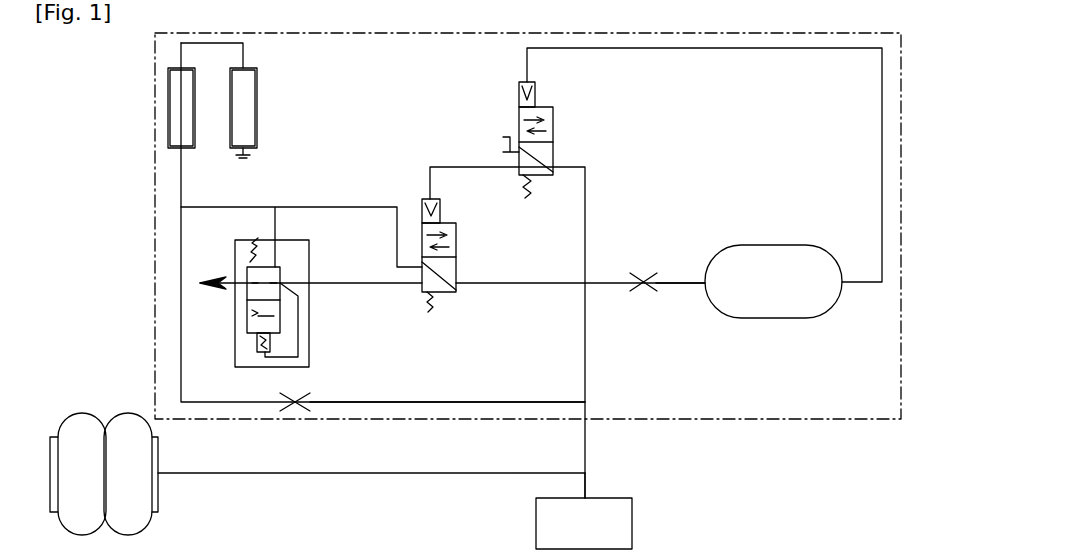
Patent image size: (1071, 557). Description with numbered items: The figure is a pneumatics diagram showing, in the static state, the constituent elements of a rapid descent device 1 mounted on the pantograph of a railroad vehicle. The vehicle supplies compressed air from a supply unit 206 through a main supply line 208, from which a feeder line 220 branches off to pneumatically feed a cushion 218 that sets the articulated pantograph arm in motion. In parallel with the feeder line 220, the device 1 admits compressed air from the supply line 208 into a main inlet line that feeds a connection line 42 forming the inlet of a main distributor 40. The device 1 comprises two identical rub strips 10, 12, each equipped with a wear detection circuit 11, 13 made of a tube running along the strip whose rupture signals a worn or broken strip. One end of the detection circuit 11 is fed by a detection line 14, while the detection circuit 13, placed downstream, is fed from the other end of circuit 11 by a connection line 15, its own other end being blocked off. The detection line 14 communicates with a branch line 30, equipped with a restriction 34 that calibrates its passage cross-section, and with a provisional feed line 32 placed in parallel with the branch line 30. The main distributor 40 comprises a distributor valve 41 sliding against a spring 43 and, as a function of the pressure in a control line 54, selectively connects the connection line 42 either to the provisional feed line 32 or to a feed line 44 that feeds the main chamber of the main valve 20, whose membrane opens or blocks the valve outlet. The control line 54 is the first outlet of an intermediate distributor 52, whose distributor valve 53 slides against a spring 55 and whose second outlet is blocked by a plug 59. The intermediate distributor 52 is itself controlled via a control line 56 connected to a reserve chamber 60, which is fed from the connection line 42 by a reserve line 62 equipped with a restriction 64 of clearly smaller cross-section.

The rapid descent device 1 is at (148, 45).
The rub strip 10 is at (167, 118).
The wear detection circuit 11 is at (181, 135).
The rub strip 12 is at (257, 85).
The wear detection circuit 13 is at (250, 125).
The detection line 14 is at (174, 167).
The connection line 15 is at (208, 58).
The main valve 20 is at (322, 338).
The branch line 30 is at (395, 403).
The provisional feed line 32 is at (343, 205).
The restriction 34 is at (290, 410).
The main distributor 40 is at (489, 272).
The distributor valve 41 is at (456, 235).
The connection line 42 is at (518, 284).
The spring 43 is at (427, 312).
The feed line 44 is at (345, 285).
The intermediate distributor 52 is at (539, 124).
The distributor valve 53 is at (553, 115).
The control line 54 is at (445, 165).
The spring 55 is at (540, 205).
The control line 56 is at (680, 50).
The plug 59 is at (506, 122).
The reserve chamber 60 is at (773, 281).
The reserve line 62 is at (680, 285).
The restriction 64 is at (640, 270).
The supply unit 206 is at (584, 523).
The supply line 208 is at (589, 488).
The cushion 218 is at (160, 533).
The feeder line 220 is at (375, 475).